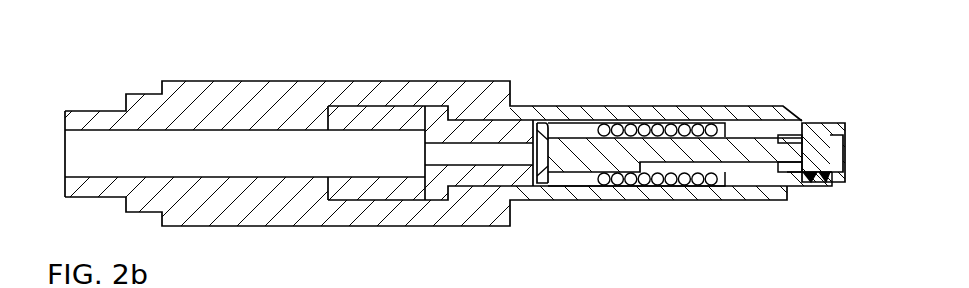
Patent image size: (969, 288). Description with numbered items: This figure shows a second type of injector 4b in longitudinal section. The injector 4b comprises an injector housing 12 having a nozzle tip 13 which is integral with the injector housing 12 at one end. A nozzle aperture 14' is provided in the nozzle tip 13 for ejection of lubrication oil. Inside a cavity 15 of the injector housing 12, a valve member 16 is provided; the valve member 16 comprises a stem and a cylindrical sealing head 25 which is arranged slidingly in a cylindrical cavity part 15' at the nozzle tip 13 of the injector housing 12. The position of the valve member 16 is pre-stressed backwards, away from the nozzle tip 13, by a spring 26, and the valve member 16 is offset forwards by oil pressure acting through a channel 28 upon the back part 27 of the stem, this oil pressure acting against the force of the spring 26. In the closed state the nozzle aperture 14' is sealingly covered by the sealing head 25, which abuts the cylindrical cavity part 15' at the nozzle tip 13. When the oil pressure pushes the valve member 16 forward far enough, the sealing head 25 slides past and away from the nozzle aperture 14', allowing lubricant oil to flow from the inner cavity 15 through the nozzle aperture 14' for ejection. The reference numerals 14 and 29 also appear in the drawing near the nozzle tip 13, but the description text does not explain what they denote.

The injector 4b is at (136, 78).
The injector housing 12 is at (382, 93).
The channel 28 is at (463, 157).
The back part of the stem 27 is at (548, 157).
The valve member 16 is at (580, 150).
The spring 26 is at (637, 127).
The cylindrical cavity part 15' is at (775, 86).
The cavity 15 is at (744, 209).
The nozzle tip 13 is at (827, 114).
The outlet passage 14 is at (831, 124).
The cylindrical sealing head 25 is at (803, 152).
The nozzle aperture 14' is at (815, 229).
The sealing element 29 is at (820, 173).